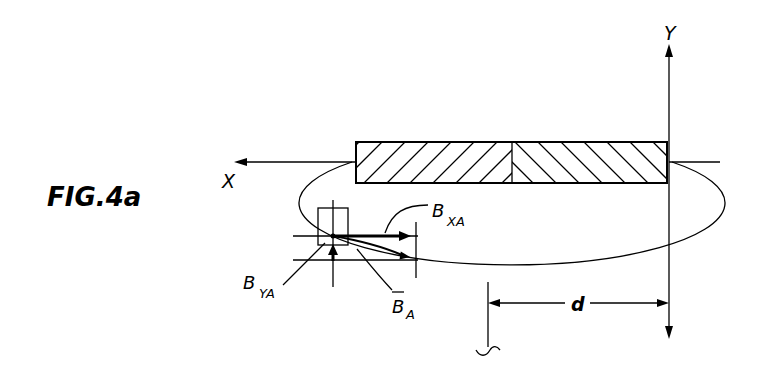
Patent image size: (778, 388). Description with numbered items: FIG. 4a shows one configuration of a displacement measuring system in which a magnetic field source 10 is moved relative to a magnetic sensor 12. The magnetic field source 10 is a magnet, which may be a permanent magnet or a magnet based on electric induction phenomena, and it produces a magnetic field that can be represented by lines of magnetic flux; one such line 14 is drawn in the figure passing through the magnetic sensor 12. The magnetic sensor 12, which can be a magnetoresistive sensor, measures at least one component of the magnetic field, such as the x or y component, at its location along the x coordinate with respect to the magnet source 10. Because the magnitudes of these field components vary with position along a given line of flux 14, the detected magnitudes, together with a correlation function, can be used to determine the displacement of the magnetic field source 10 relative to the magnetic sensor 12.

The magnetic field source 10 is at (568, 158).
The magnetic sensor 12 is at (322, 220).
The magnetic field line 14 is at (471, 278).